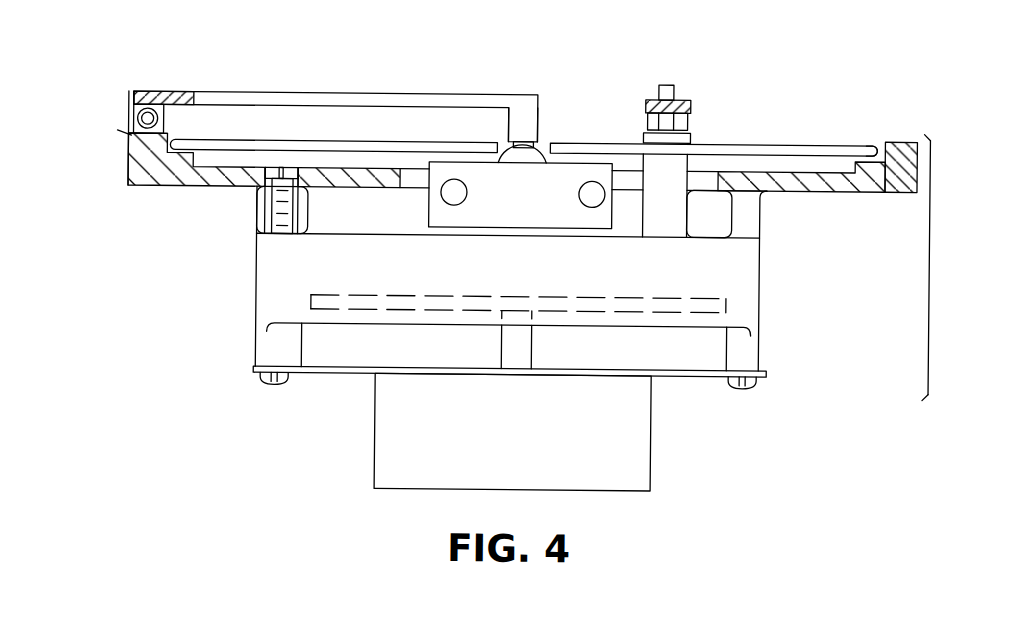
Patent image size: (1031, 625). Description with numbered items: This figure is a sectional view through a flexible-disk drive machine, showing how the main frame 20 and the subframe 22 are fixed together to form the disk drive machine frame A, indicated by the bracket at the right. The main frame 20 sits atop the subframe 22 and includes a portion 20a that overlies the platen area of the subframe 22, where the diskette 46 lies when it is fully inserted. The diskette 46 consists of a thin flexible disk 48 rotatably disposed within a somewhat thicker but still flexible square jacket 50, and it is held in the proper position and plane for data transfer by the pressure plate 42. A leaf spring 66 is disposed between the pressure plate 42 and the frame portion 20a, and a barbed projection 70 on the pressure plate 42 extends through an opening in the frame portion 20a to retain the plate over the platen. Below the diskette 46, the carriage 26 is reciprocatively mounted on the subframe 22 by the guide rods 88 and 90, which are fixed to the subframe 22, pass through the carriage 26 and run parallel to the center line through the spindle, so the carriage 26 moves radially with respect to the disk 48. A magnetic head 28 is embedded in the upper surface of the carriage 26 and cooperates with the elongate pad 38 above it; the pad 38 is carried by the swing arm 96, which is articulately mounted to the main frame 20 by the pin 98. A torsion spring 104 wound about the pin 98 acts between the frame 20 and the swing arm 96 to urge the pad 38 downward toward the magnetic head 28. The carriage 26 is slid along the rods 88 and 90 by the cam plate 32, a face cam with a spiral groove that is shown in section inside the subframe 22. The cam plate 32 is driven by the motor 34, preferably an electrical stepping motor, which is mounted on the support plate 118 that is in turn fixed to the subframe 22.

The main frame 20 is at (523, 126).
The portion of the frame 20a is at (650, 94).
The subframe 22 is at (543, 279).
The carriage 26 is at (493, 194).
The magnetic head 28 is at (500, 153).
The cam plate 32 is at (519, 281).
The motor 34 is at (500, 438).
The elongate pad 38 is at (548, 136).
The pressure plate 42 is at (690, 134).
The diskette 46 is at (787, 135).
The disk 48 is at (506, 141).
The jacket 50 is at (860, 126).
The leaf spring 66 is at (689, 119).
The barbed projection 70 is at (668, 62).
The guide rod 88 is at (476, 185).
The guide rod 90 is at (567, 201).
The swing arm 96 is at (335, 92).
The pin 98 is at (152, 87).
The torsion spring 104 is at (114, 88).
The support plate 118 is at (510, 405).
The disk drive machine frame A is at (938, 268).